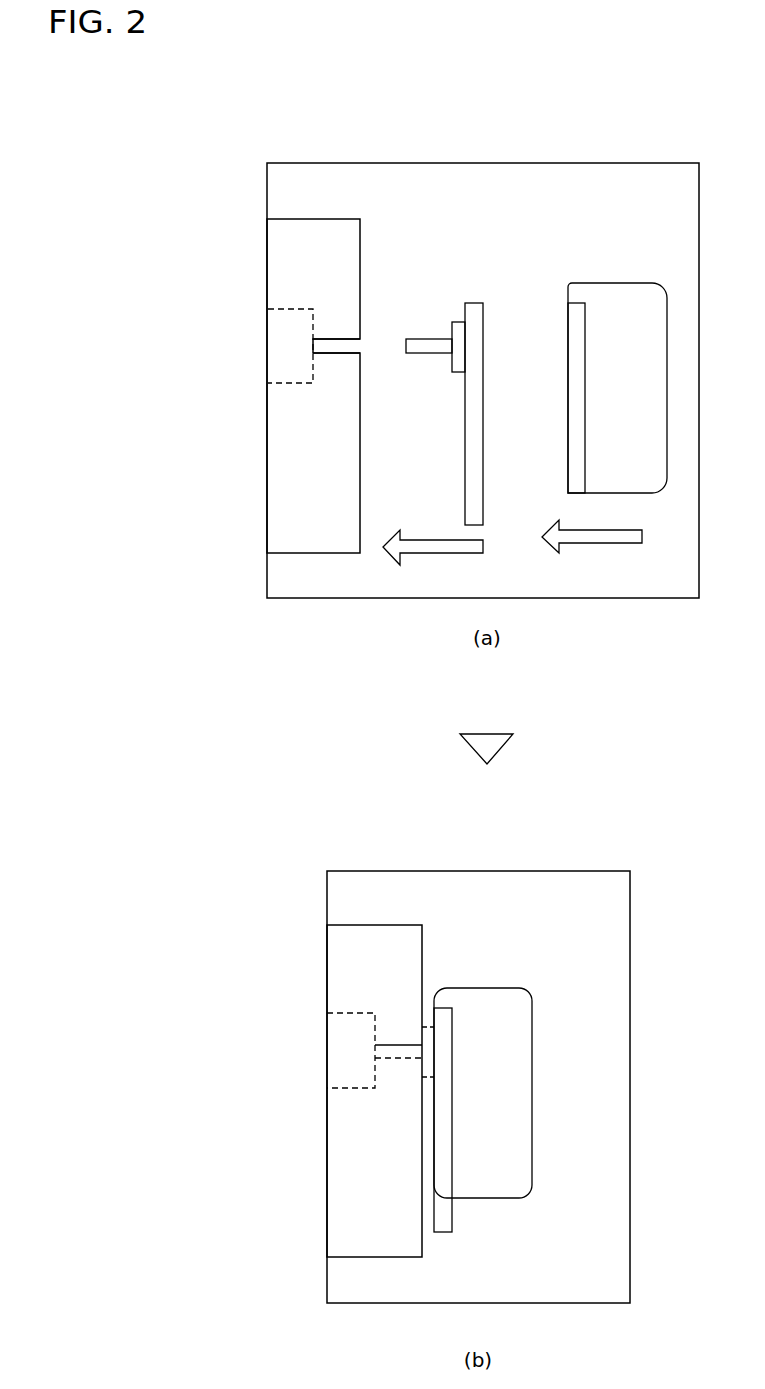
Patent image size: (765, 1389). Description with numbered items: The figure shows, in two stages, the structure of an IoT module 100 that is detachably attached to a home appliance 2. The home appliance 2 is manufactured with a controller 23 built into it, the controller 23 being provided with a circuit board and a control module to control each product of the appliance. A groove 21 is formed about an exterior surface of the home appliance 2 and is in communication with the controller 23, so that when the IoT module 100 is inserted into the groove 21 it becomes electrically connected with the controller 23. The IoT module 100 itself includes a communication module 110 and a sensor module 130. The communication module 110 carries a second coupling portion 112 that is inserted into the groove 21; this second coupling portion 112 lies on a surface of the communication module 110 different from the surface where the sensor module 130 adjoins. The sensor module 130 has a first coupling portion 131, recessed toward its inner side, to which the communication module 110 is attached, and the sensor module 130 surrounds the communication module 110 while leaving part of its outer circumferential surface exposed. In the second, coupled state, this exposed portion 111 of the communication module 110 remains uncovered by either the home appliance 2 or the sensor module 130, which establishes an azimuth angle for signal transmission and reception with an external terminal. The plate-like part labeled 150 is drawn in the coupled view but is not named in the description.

The home appliance 2 is at (312, 219).
The groove 21 is at (339, 339).
The controller 23 is at (302, 383).
The IoT module 100 is at (542, 973).
The communication module 110 is at (473, 303).
The exposed portion 111 is at (458, 1232).
The second coupling portion 112 is at (432, 339).
The sensor module 130 is at (613, 283).
The first coupling portion 131 is at (574, 395).
The plate 150 is at (447, 1232).